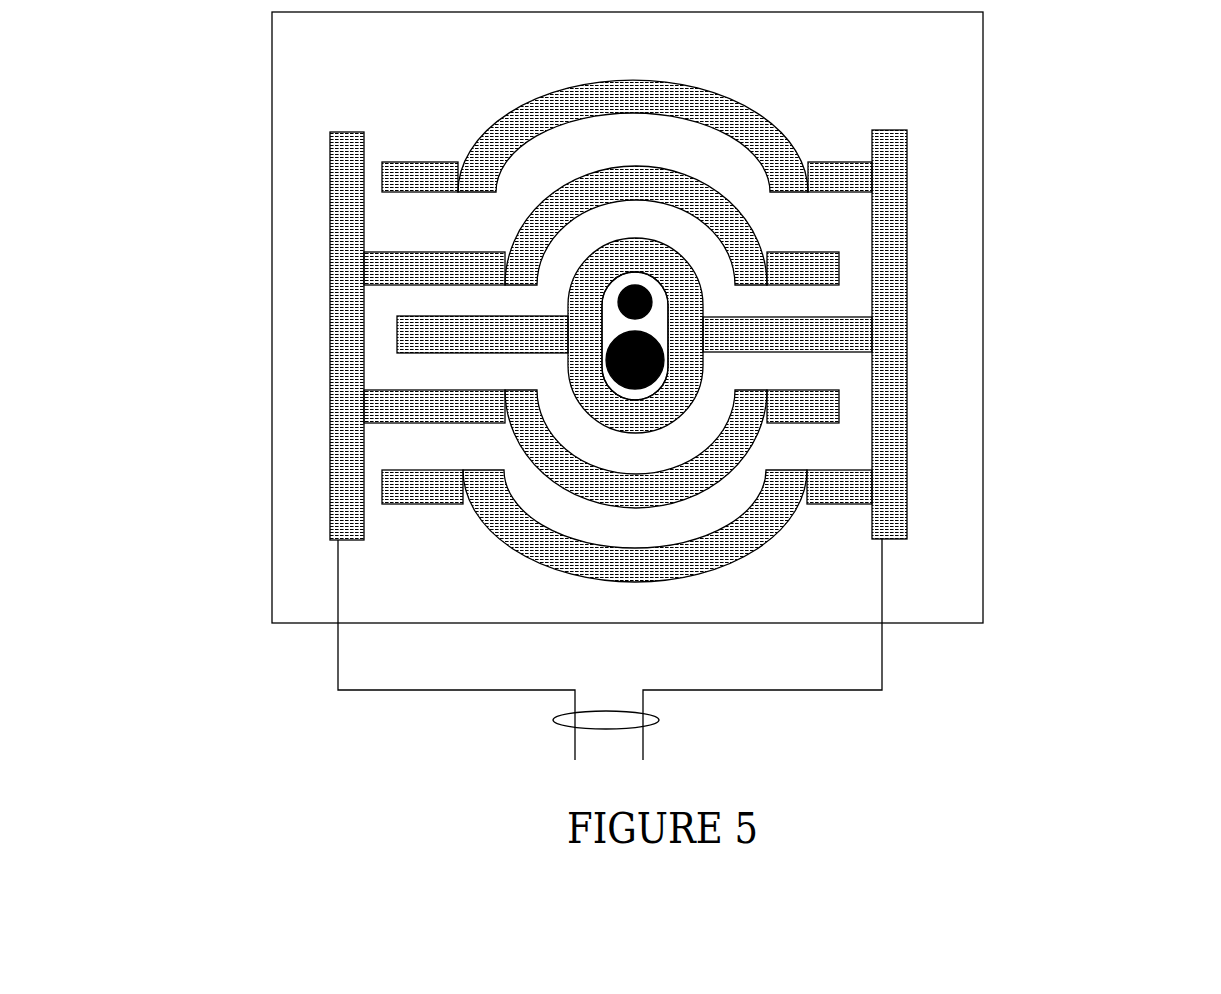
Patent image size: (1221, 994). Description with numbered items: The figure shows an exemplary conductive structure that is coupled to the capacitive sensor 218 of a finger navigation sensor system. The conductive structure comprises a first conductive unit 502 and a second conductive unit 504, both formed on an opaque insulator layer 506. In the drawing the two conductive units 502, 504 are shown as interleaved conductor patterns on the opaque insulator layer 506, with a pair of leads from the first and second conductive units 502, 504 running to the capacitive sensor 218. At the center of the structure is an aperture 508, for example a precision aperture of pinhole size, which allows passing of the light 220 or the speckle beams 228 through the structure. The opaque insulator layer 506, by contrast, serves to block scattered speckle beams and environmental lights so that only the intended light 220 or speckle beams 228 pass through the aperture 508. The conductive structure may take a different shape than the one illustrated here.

The opaque insulator layer 506 is at (973, 49).
The first conductive unit 502 is at (350, 513).
The second conductive unit 504 is at (883, 495).
The aperture 508 is at (655, 325).
The light 220 is at (653, 305).
The speckle beams 228 is at (664, 359).
The capacitive sensor 218 is at (660, 717).